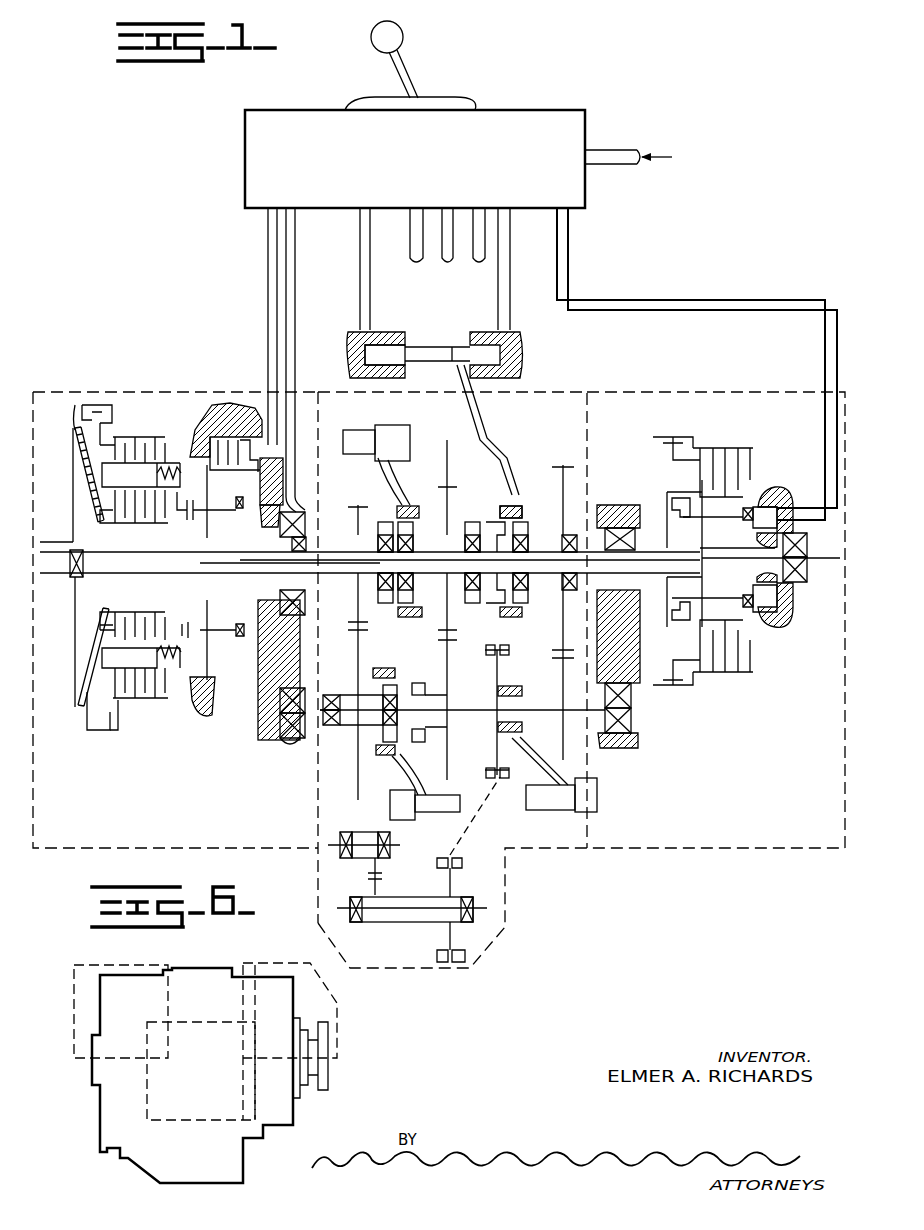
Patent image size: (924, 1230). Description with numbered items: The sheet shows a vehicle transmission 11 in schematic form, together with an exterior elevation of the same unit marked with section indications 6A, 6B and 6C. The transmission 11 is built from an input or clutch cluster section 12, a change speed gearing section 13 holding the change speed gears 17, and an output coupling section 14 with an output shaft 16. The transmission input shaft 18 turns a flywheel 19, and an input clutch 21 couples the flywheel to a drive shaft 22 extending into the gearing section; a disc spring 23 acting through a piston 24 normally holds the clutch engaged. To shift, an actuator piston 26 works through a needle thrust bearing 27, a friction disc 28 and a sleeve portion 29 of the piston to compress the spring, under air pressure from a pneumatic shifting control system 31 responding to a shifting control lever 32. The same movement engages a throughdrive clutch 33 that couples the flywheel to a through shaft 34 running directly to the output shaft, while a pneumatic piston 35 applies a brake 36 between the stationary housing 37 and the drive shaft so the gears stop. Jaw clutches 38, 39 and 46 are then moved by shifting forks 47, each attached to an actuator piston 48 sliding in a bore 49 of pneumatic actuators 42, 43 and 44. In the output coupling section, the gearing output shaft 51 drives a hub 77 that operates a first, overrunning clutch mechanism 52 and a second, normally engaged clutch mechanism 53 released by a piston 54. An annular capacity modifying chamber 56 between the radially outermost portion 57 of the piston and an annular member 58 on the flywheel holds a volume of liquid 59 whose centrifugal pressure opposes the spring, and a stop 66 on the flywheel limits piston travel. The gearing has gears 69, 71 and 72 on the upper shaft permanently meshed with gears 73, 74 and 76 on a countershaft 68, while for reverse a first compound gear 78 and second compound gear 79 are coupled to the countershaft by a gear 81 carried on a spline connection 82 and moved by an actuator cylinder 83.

In FIG. 1, the transmission 11 is at (656, 934).
In FIG. 1, the input or clutch cluster section 12 is at (150, 388).
In FIG. 6, the input or clutch cluster section 12 is at (118, 1062).
In FIG. 1, the change speed gearing section 13 is at (540, 852).
In FIG. 6, the change speed gearing section 13 is at (205, 1124).
In FIG. 1, the output coupling section 14 is at (723, 852).
In FIG. 6, the output coupling section 14 is at (275, 1062).
In FIG. 1, the output shaft 16 is at (820, 560).
In FIG. 1, the change speed gears 17 is at (579, 488).
In FIG. 1, the transmission input shaft 18 is at (33, 541).
In FIG. 1, the flywheel 19 is at (75, 433).
In FIG. 1, the input clutch 21 is at (138, 436).
In FIG. 1, the drive shaft 22 is at (206, 538).
In FIG. 1, the spring 23 is at (103, 615).
In FIG. 1, the piston 24 is at (100, 655).
In FIG. 1, the actuator piston 26 is at (245, 493).
In FIG. 1, the needle thrust bearing 27 is at (234, 626).
In FIG. 1, the friction disc 28 is at (180, 665).
In FIG. 1, the sleeve portion 29 is at (130, 698).
In FIG. 1, the shifting control system 31 is at (578, 84).
In FIG. 1, the shifting control lever 32 is at (412, 58).
In FIG. 1, the throughdrive clutch 33 is at (125, 610).
In FIG. 1, the through shaft 34 is at (150, 572).
In FIG. 1, the pneumatic piston 35 is at (262, 410).
In FIG. 1, the brake 36 is at (230, 700).
In FIG. 1, the stationary housing 37 is at (212, 718).
In FIG. 1, the jaw clutch 38 is at (514, 506).
In FIG. 1, the second jaw clutch 39 is at (422, 620).
In FIG. 1, the pneumatic actuator 42 is at (420, 314).
In FIG. 1, the pneumatic actuator 43 is at (362, 430).
In FIG. 1, the pneumatic actuator 44 is at (450, 812).
In FIG. 1, the third jaw clutch 46 is at (395, 750).
In FIG. 1, the shifting fork 47 is at (482, 416).
In FIG. 1, the actuator piston 48 is at (440, 344).
In FIG. 1, the bore 49 is at (383, 342).
In FIG. 1, the output shaft of the gearing section 51 is at (650, 520).
In FIG. 1, the first clutch mechanism 52 is at (730, 440).
In FIG. 1, the second output clutch mechanism 53 is at (677, 517).
In FIG. 1, the piston 54 is at (752, 525).
In FIG. 1, the capacity modifying chamber 56 is at (108, 730).
In FIG. 1, the radially outermost portion 57 is at (95, 701).
In FIG. 1, the annular member 58 is at (112, 398).
In FIG. 1, the volume of liquid 59 is at (78, 400).
In FIG. 1, the stop 66 is at (88, 723).
In FIG. 1, the countershaft 68 is at (520, 705).
In FIG. 1, the gear 69 is at (358, 502).
In FIG. 1, the gear 71 is at (447, 478).
In FIG. 1, the gear 72 is at (560, 468).
In FIG. 1, the gear 73 is at (350, 752).
In FIG. 1, the gear 74 is at (447, 737).
In FIG. 1, the gear 76 is at (590, 745).
In FIG. 1, the hub 77 is at (670, 578).
In FIG. 1, the first compound gear 78 is at (362, 860).
In FIG. 1, the second compound gear 79 is at (425, 918).
In FIG. 1, the gear 81 is at (500, 655).
In FIG. 1, the spline connection 82 is at (488, 700).
In FIG. 1, the actuator cylinder 83 is at (598, 795).
In FIG. 6, the section line 6A is at (100, 965).
In FIG. 6, the section line 6B is at (213, 1020).
In FIG. 6, the section line 6C is at (337, 996).